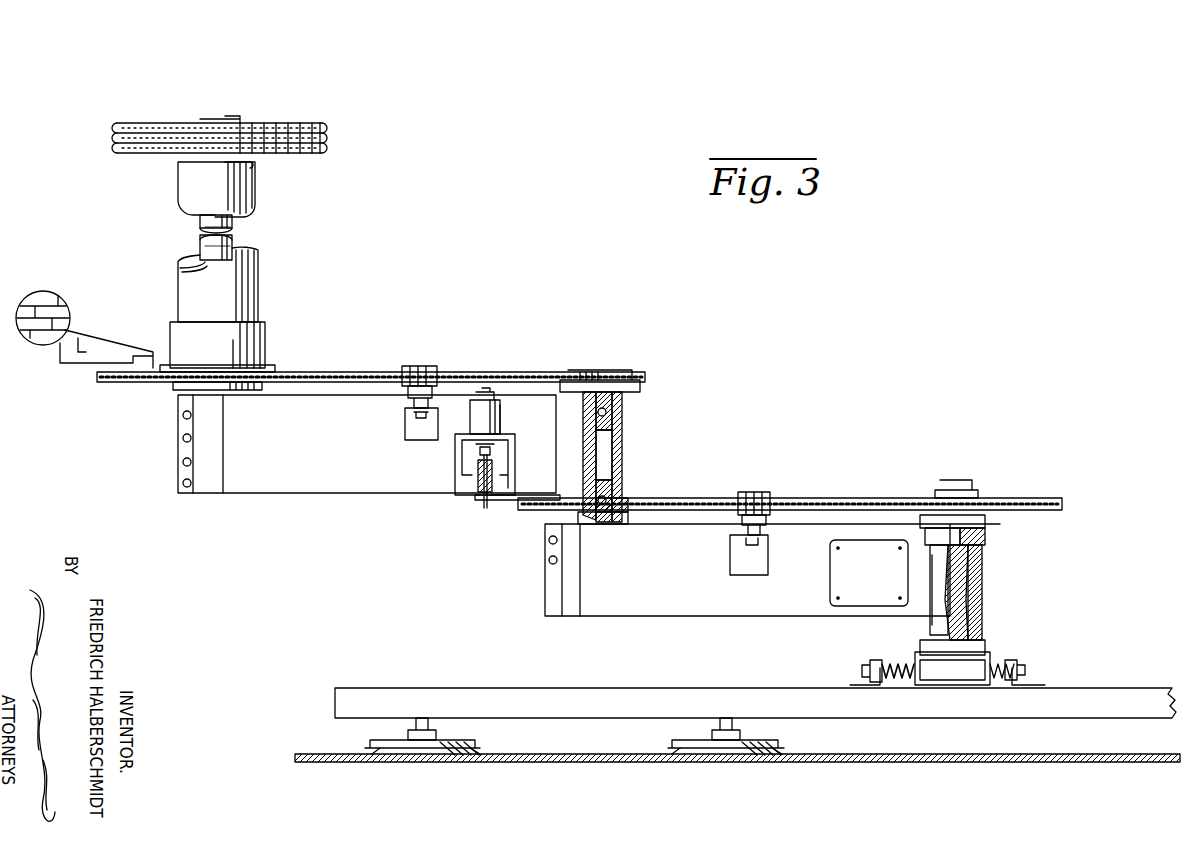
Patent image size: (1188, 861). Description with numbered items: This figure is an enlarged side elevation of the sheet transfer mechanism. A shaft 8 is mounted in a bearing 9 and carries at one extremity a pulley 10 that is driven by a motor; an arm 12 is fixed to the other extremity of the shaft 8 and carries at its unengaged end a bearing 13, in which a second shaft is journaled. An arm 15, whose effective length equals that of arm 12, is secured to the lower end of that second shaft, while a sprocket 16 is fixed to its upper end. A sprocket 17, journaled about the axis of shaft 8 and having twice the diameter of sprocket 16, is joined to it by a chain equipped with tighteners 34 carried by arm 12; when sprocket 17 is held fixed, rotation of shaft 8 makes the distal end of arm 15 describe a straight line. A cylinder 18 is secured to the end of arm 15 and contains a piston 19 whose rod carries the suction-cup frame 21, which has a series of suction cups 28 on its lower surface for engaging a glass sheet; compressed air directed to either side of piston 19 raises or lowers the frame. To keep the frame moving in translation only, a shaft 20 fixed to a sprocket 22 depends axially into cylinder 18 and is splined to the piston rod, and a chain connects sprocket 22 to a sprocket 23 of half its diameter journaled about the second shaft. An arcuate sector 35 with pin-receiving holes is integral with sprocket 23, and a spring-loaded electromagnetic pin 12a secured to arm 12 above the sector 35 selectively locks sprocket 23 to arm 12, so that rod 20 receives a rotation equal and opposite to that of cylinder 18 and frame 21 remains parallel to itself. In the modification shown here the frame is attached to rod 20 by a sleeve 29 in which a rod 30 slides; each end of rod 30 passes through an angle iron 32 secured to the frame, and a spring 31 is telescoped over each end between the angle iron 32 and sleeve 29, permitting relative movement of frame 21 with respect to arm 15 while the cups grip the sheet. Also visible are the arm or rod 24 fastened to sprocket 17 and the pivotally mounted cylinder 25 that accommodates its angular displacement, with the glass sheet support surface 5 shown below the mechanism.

The floor 5 is at (605, 762).
The shaft 8 is at (205, 250).
The bearing 9 is at (182, 186).
The pulley 10 is at (306, 131).
The arm 12 is at (260, 473).
The pin 12a is at (486, 502).
The bearing 13 is at (622, 432).
The arm 15 is at (722, 605).
The sprocket 16 is at (612, 370).
The sprocket 17 is at (140, 380).
The cylinder 18 is at (982, 558).
The piston 19 is at (962, 568).
The shaft 20 is at (958, 600).
The suction-cup frame 21 is at (682, 690).
The sprocket 22 is at (1046, 498).
The sprocket 23 is at (632, 496).
The arm or rod 24 is at (90, 346).
The cylinder 25 is at (45, 292).
The suction cups 28 is at (422, 748).
The sleeve 29 is at (955, 672).
The rod 30 is at (1010, 660).
The spring 31 is at (888, 664).
The angle irons 32 is at (852, 686).
The tighteners 34 is at (432, 366).
The sector 35 is at (510, 505).